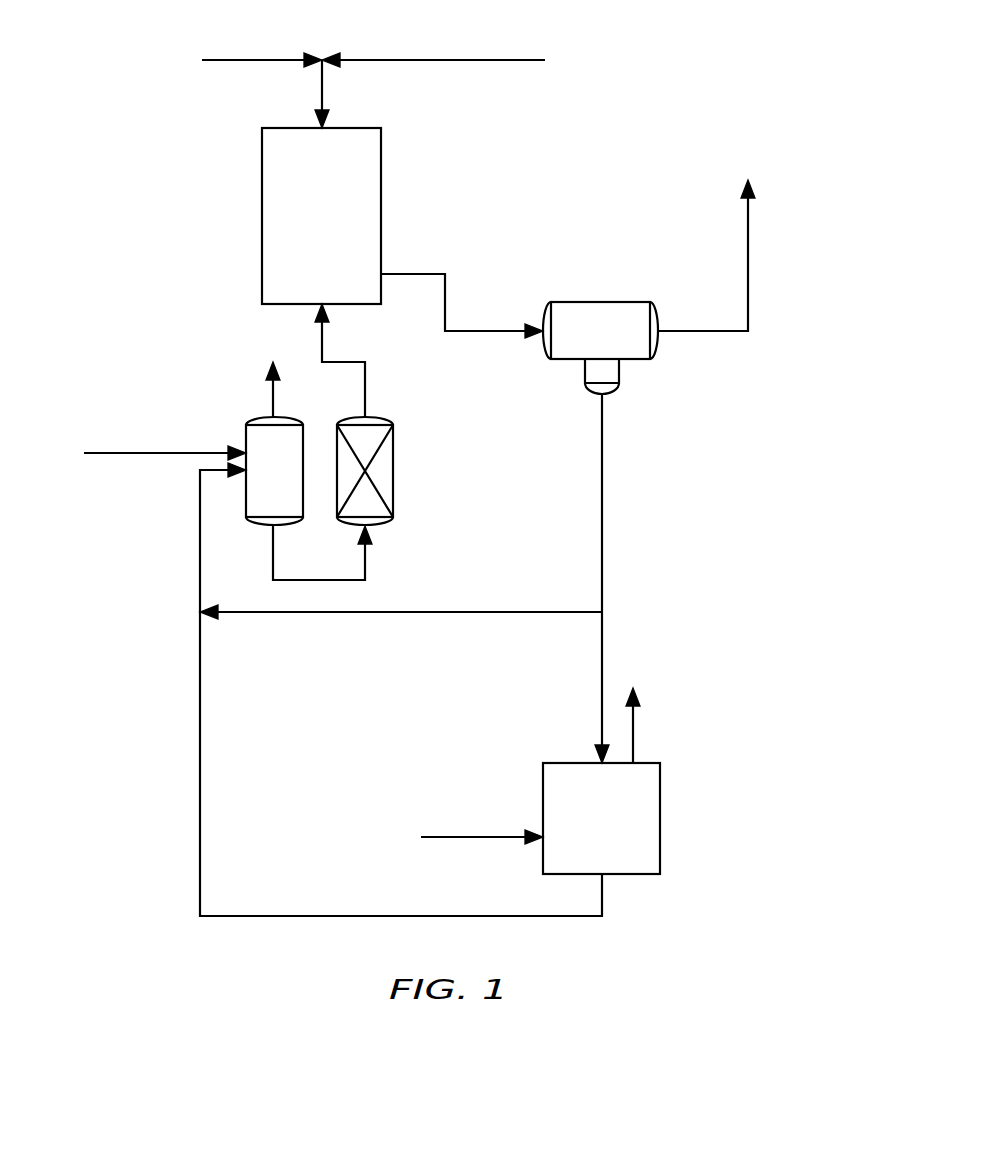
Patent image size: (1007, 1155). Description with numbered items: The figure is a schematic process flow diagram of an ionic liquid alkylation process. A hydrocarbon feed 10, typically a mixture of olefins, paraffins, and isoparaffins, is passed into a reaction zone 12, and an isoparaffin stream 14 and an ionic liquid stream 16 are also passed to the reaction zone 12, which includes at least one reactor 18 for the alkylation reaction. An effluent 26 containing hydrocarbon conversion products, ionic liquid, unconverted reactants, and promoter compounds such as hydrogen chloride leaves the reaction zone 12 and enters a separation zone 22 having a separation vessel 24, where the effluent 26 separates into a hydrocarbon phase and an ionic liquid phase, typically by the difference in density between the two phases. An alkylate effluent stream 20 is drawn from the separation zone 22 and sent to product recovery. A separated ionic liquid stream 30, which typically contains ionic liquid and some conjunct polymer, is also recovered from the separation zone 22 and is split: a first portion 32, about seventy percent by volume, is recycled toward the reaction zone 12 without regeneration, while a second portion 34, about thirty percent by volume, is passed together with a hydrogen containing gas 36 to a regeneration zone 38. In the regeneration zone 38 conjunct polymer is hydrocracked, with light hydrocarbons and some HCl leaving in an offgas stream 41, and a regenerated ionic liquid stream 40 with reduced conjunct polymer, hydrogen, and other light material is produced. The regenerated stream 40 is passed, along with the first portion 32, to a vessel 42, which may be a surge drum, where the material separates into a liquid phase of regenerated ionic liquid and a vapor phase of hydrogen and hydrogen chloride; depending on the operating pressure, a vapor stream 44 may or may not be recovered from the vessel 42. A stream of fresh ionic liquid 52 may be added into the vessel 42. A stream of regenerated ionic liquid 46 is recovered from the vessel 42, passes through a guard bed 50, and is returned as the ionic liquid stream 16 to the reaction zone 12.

The hydrocarbon feed 10 is at (268, 60).
The isoparaffin stream 14 is at (402, 60).
The reaction zone 12 is at (340, 198).
The reactor 18 is at (262, 213).
The effluent 26 is at (411, 274).
The ionic liquid stream 16 is at (322, 344).
The separation zone 22 is at (600, 284).
The separation vessel 24 is at (598, 302).
The alkylate effluent stream 20 is at (748, 264).
The separated ionic liquid stream 30 is at (602, 493).
The first portion 32 is at (535, 612).
The second portion 34 is at (602, 655).
The regeneration zone 38 is at (712, 778).
The offgas stream 41 is at (633, 727).
The hydrogen containing gas 36 is at (482, 837).
The regenerated ionic liquid stream 40 is at (602, 895).
The fresh ionic liquid stream 52 is at (155, 453).
The vessel 42 is at (246, 505).
The vapor stream 44 is at (273, 398).
The guard bed 50 is at (395, 470).
The regenerated ionic liquid 46 is at (365, 560).